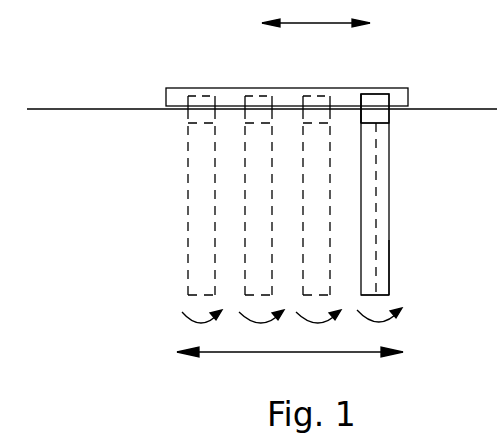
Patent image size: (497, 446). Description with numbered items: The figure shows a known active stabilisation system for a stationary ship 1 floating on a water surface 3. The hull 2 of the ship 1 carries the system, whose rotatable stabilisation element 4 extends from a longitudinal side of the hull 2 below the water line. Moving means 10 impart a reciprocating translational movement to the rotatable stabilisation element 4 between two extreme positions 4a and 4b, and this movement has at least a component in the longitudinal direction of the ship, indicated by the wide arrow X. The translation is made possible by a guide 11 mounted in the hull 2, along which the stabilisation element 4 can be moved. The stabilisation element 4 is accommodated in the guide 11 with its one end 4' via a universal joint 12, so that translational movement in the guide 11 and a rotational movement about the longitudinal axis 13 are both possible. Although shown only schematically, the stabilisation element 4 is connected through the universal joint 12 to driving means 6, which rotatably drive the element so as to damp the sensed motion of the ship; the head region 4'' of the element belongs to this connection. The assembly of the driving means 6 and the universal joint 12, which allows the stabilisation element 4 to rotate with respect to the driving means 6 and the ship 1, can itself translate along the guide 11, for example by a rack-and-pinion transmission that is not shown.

The stationary ship 1 is at (140, 49).
The hull 2 is at (69, 108).
The water surface 3 is at (115, 180).
The rotatable stabilisation element 4 is at (397, 194).
The extreme position 4a is at (200, 290).
The extreme position 4b is at (377, 277).
The end of stabilisation element 4' is at (401, 300).
The pin head 4'' is at (375, 108).
The driving means 6 is at (389, 115).
The moving means 10 is at (373, 80).
The guide 11 is at (199, 95).
The universal joint 12 is at (362, 122).
The longitudinal axis 13 is at (376, 192).
The longitudinal direction of the ship X is at (316, 13).